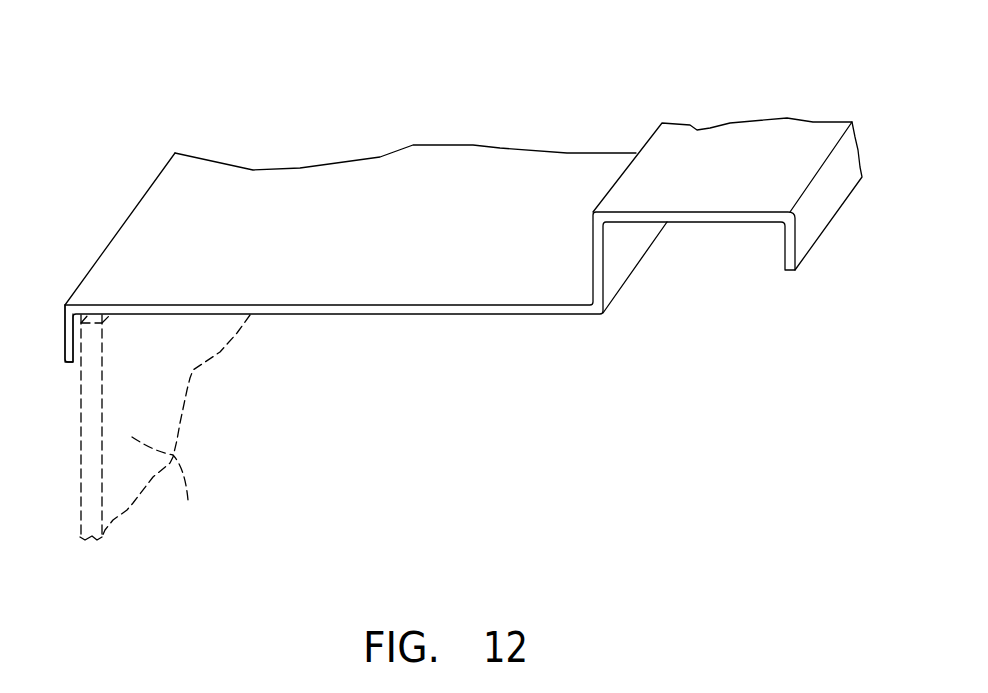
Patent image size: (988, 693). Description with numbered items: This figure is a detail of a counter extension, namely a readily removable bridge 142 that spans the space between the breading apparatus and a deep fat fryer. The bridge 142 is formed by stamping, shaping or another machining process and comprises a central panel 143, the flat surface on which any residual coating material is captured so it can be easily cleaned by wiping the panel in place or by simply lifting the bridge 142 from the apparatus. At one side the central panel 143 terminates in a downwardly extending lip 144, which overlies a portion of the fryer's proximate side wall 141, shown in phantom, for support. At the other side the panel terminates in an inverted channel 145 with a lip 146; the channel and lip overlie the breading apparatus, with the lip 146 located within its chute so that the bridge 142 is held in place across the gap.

The proximate side wall 141 is at (165, 427).
The bridge 142 is at (452, 298).
The central panel 143 is at (395, 282).
The downwardly extending lip 144 is at (62, 332).
The inverted channel 145 is at (733, 147).
The lip 146 is at (820, 208).